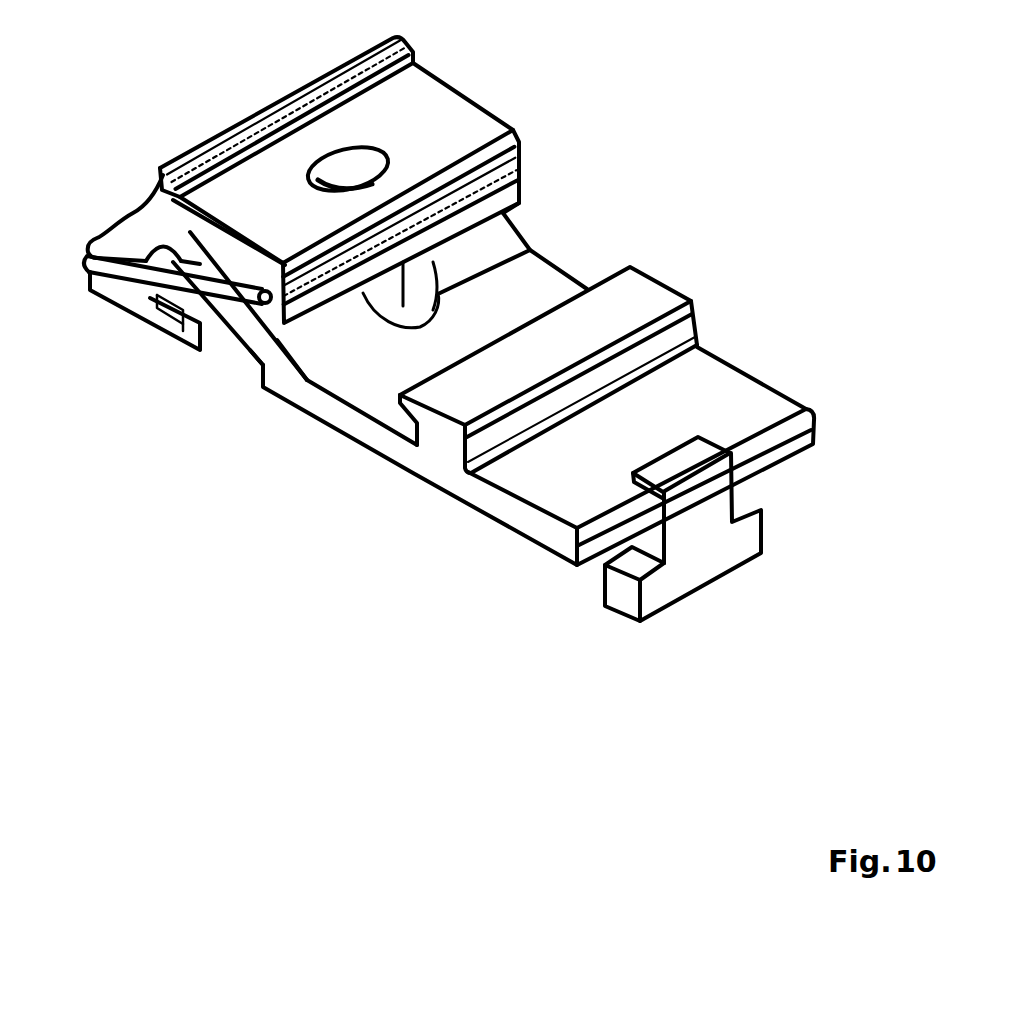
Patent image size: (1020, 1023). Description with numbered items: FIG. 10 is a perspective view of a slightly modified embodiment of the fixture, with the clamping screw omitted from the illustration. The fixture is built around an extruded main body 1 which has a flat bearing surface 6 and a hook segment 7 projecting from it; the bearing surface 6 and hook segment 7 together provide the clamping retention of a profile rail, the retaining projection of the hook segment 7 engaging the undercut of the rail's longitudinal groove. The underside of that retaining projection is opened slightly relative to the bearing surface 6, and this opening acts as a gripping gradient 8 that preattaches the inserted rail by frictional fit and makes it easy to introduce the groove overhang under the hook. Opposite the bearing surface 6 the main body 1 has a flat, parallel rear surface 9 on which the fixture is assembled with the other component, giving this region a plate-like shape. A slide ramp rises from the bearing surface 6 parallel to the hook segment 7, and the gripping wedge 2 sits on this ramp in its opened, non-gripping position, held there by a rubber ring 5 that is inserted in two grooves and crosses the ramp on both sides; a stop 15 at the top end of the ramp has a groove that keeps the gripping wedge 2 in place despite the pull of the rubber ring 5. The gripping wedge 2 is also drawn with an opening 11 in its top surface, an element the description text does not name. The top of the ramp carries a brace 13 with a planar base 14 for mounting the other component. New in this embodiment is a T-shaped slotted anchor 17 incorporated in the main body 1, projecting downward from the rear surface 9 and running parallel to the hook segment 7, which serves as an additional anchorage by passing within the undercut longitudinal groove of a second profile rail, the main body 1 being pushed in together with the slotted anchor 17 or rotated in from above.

The main body 1 is at (816, 423).
The gripping wedge 2 is at (487, 130).
The rubber ring 5 is at (113, 270).
The bearing surface 6 is at (540, 278).
The hook segment 7 is at (652, 308).
The gripping gradient 8 is at (395, 412).
The rear surface 9 is at (382, 462).
The opening 11 is at (360, 165).
The brace 13 is at (140, 227).
The planar base 14 is at (182, 345).
The stop 15 is at (306, 100).
The T-shaped slotted anchor 17 is at (698, 557).